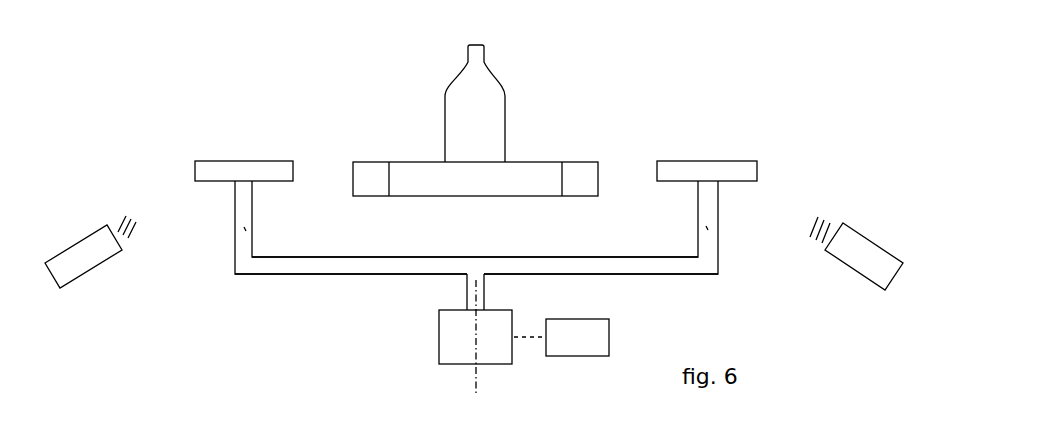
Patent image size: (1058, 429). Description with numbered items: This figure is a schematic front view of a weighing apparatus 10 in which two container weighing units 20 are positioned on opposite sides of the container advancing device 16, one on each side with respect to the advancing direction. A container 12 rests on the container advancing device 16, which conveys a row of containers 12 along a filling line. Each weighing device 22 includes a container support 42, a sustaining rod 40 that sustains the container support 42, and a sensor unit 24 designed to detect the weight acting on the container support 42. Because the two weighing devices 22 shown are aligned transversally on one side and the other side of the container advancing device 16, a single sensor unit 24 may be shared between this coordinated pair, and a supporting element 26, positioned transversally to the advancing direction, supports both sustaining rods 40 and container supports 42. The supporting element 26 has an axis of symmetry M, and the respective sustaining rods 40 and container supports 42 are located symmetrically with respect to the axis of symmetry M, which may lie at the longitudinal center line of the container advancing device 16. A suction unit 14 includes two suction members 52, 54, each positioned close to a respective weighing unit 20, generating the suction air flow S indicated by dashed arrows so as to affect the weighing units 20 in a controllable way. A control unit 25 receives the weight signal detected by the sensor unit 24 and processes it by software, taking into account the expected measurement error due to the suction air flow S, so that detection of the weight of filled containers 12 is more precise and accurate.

The apparatus 10 is at (152, 67).
The container 12 is at (490, 121).
The suction unit 14 is at (474, 268).
The container advancing device 16 is at (583, 153).
The container weighing unit 20 is at (742, 132).
The weighing device 22 is at (236, 288).
The sensor unit 24 is at (448, 346).
The control unit 25 is at (578, 343).
The supporting element 26 is at (353, 262).
The sustaining rod 40 is at (246, 229).
The container support 42 is at (242, 172).
The suction member 52 is at (77, 246).
The suction member 54 is at (871, 246).
The suction air flow S is at (133, 215).
The axis of symmetry M is at (476, 352).